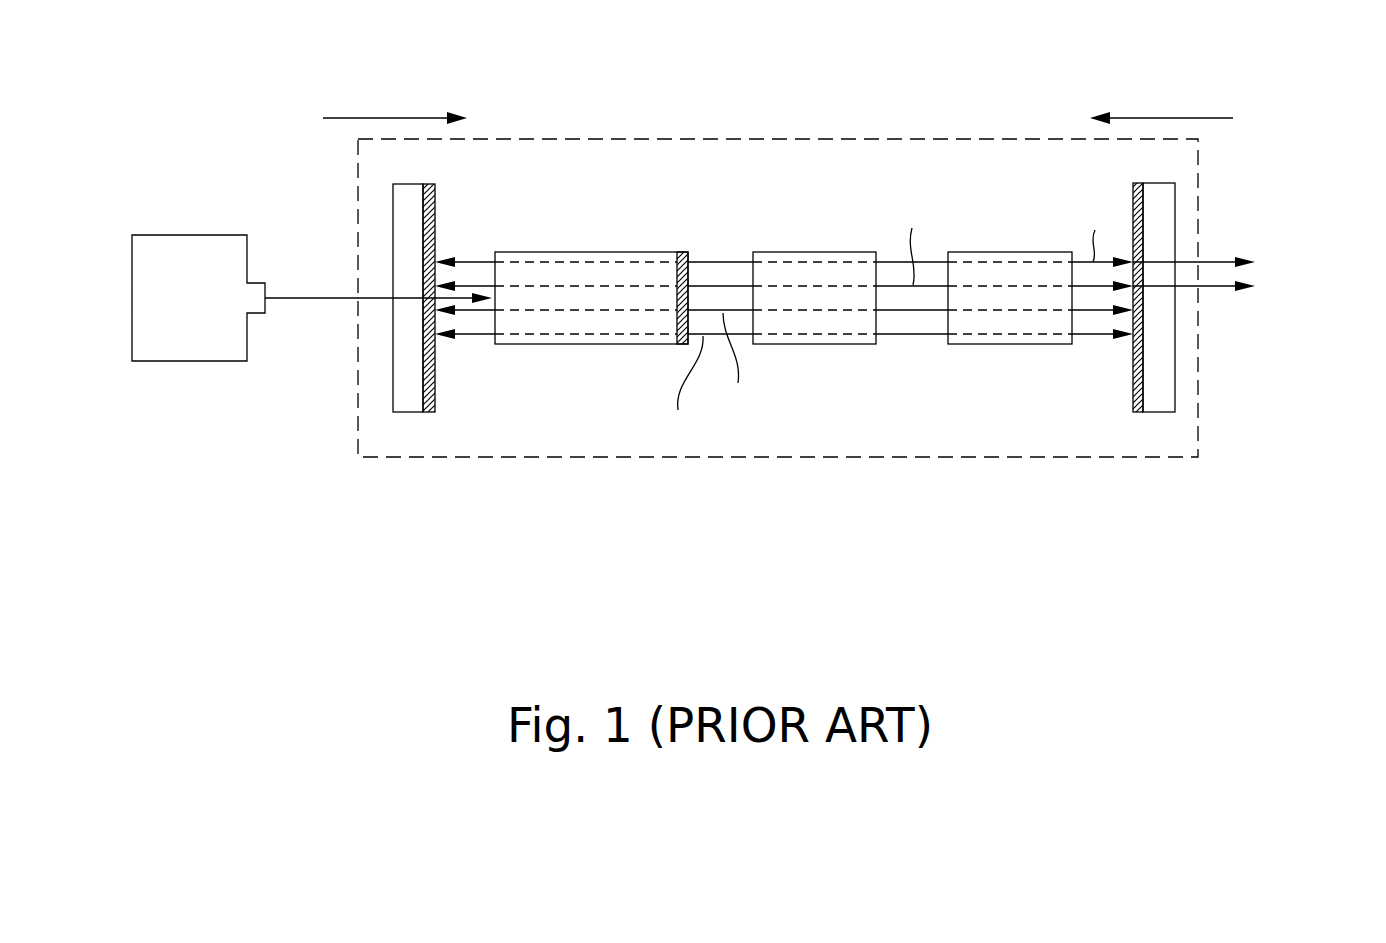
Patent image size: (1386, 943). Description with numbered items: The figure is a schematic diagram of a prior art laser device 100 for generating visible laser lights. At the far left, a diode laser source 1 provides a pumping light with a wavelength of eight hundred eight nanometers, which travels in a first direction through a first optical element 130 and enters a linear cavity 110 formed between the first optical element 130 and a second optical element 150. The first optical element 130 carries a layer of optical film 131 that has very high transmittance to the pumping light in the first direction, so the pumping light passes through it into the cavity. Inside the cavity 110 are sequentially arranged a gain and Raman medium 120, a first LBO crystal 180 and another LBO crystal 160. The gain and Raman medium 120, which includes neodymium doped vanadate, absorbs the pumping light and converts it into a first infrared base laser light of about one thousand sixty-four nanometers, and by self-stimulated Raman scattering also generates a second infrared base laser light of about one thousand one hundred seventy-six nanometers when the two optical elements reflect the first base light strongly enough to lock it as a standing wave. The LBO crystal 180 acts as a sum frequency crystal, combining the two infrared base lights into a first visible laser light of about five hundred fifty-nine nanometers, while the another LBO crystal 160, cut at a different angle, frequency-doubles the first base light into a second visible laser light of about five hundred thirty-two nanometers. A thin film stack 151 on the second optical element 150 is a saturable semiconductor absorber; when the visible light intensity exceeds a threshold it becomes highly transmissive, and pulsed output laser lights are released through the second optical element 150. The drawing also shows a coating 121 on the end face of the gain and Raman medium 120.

The laser system (prior art) 100 is at (171, 42).
The diode laser source 1 is at (190, 235).
The linear cavity 110 is at (792, 137).
The gain and Raman medium 120 is at (587, 250).
The coating on gain medium 121 is at (681, 250).
The first optical element 130 is at (405, 413).
The optical film 131 is at (428, 413).
The second optical element 150 is at (1160, 413).
The thin film stack 151 is at (1138, 413).
The another LBO crystal 160 is at (1012, 250).
The LBO crystal 180 is at (815, 250).